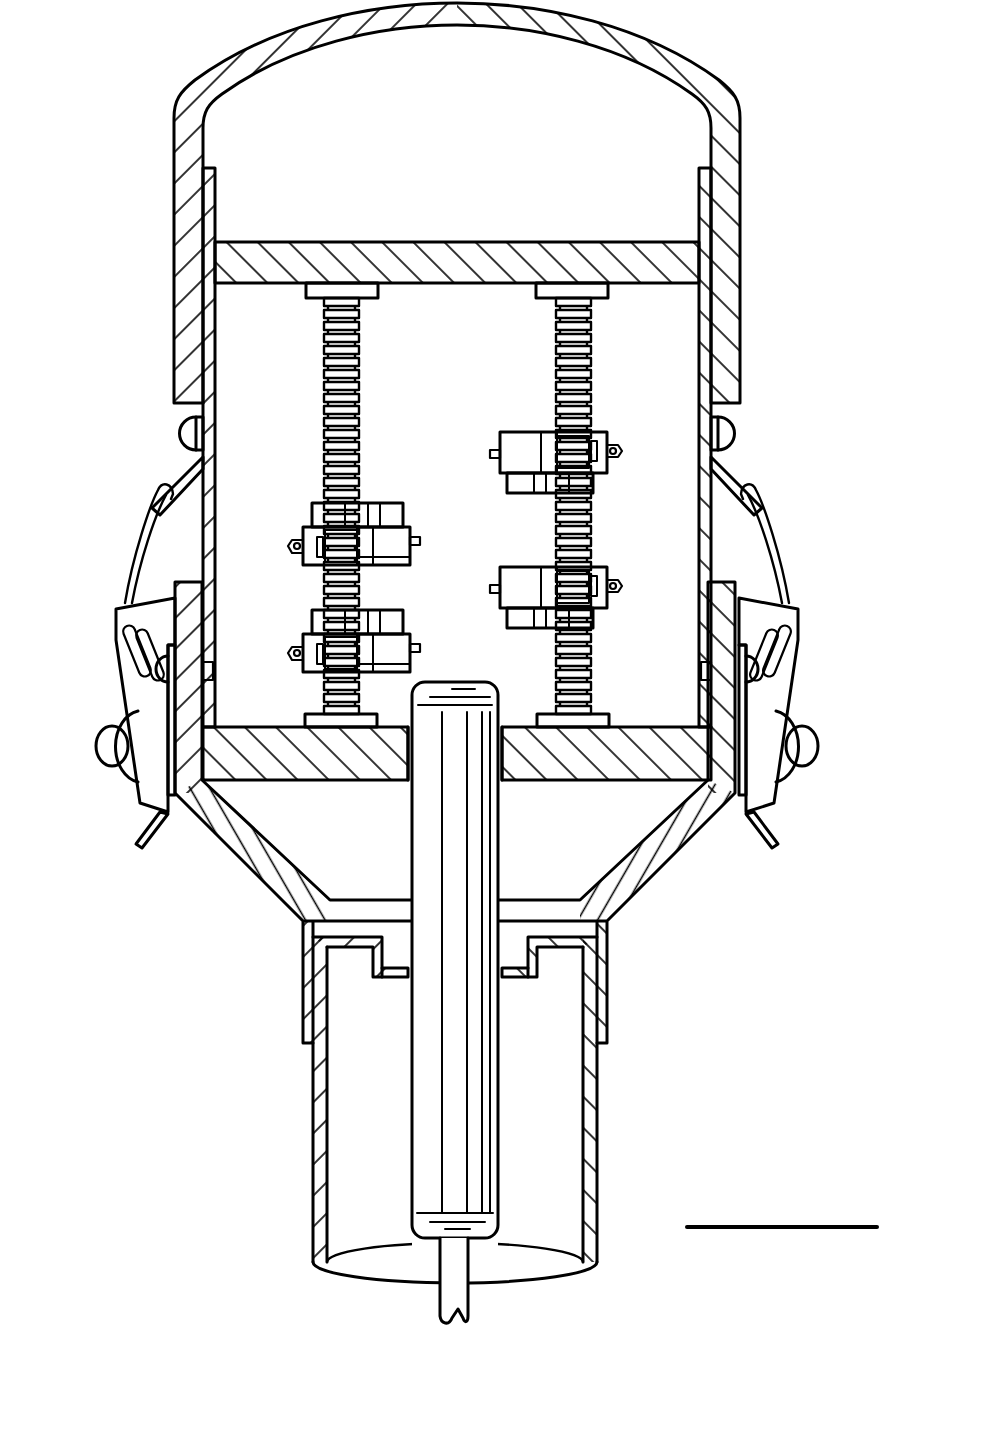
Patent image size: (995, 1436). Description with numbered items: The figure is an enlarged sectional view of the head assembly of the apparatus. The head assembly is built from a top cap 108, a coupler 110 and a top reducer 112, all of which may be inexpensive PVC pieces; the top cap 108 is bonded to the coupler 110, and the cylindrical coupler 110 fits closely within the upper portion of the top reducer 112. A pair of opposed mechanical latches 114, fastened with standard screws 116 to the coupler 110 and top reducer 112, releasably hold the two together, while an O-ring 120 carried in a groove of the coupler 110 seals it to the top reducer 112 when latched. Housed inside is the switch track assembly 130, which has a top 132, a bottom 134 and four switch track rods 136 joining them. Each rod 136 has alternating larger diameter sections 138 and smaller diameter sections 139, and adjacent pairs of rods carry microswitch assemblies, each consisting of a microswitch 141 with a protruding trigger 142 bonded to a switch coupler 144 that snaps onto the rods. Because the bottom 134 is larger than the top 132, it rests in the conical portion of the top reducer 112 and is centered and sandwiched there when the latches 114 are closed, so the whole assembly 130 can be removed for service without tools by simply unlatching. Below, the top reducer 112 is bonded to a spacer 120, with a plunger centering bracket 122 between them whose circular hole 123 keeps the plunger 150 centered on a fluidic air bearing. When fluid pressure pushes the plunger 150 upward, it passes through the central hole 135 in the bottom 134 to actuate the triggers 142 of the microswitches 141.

The top cap 108 is at (741, 128).
The coupler 110 is at (711, 347).
The top reducer 112 is at (655, 870).
The latches 114 is at (116, 607).
The screws 116 is at (731, 422).
The O-ring / spacer 120 is at (700, 670).
The plunger centering bracket 122 is at (543, 953).
The circular hole 123 is at (502, 973).
The switch track assembly 130 is at (245, 360).
The top 132 is at (483, 242).
The bottom 134 is at (382, 780).
The central hole 135 is at (507, 757).
The switch track rods 136 is at (543, 332).
The larger diameter sections 138 is at (360, 356).
The smaller diameter sections 139 is at (360, 396).
The microswitch 141 is at (600, 432).
The protruding trigger 142 is at (420, 543).
The switch coupler 144 is at (312, 512).
The plunger 150 is at (475, 877).